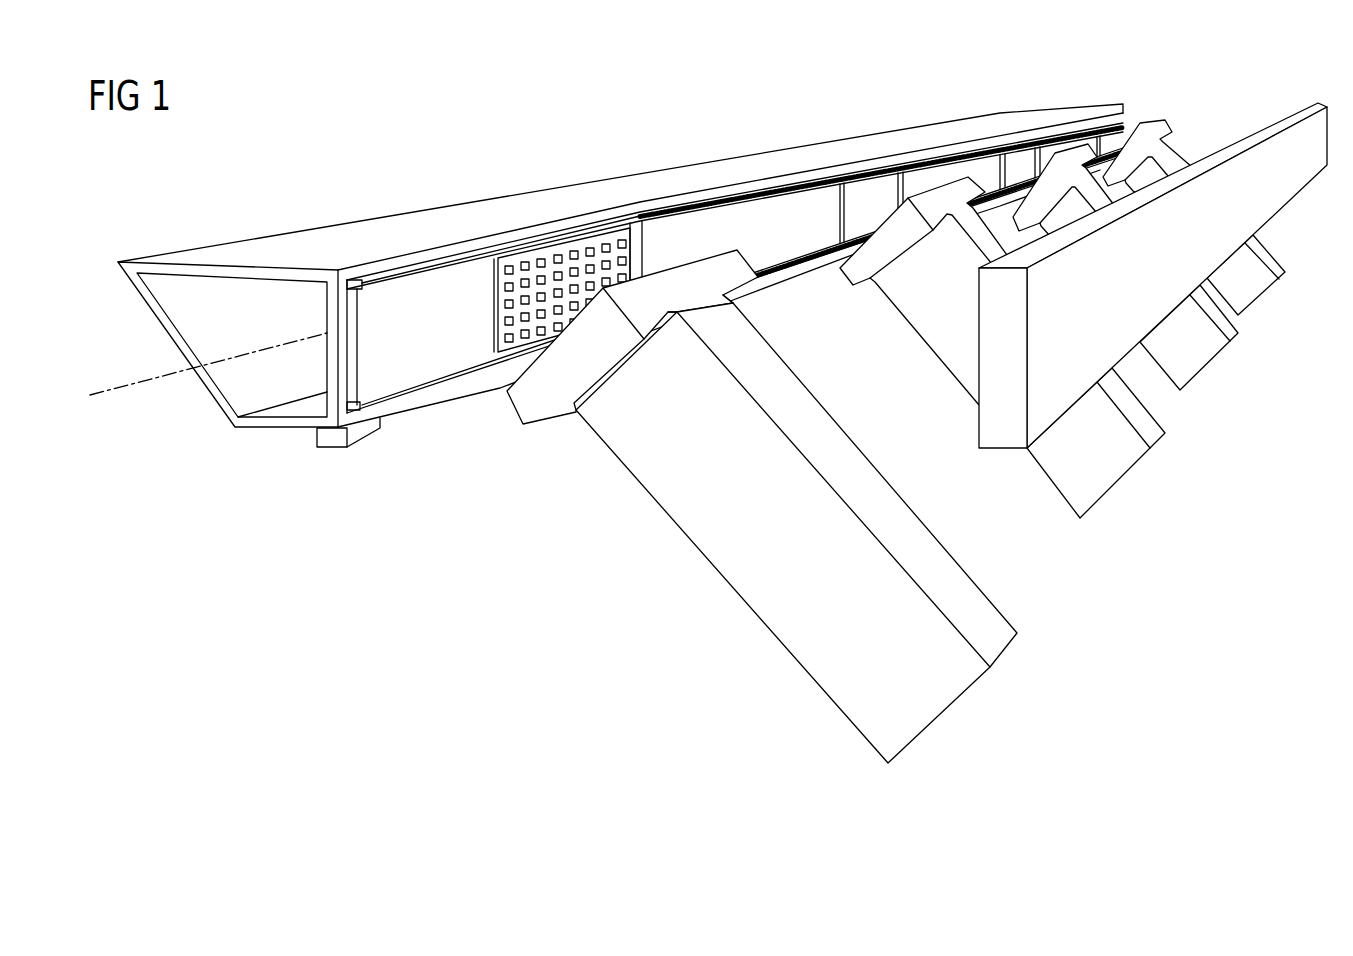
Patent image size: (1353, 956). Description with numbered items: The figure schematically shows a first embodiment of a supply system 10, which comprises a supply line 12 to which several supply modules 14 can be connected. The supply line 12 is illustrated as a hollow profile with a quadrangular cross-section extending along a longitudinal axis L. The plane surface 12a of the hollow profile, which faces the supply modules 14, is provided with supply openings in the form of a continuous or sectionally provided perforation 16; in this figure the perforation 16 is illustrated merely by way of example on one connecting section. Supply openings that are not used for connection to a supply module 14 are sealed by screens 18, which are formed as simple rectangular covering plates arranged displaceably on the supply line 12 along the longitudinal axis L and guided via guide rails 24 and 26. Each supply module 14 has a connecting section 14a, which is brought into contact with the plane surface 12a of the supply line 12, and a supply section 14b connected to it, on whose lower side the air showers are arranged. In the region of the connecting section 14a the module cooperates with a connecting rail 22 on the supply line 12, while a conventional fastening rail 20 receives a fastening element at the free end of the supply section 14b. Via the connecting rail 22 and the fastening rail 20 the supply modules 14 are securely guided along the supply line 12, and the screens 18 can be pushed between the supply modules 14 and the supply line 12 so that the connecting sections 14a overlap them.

The supply system 10 is at (303, 186).
The supply line 12 is at (237, 392).
The plane surface 12a is at (325, 342).
The supply module 14 is at (649, 622).
The connecting section 14a is at (521, 395).
The supply section 14b is at (812, 660).
The perforation 16 is at (572, 268).
The screen 18 is at (425, 298).
The fastening rail 20 is at (1213, 158).
The connecting rail 22 is at (335, 437).
The guide rail 24 is at (723, 197).
The guide rail 26 is at (792, 262).
The longitudinal axis L is at (133, 382).